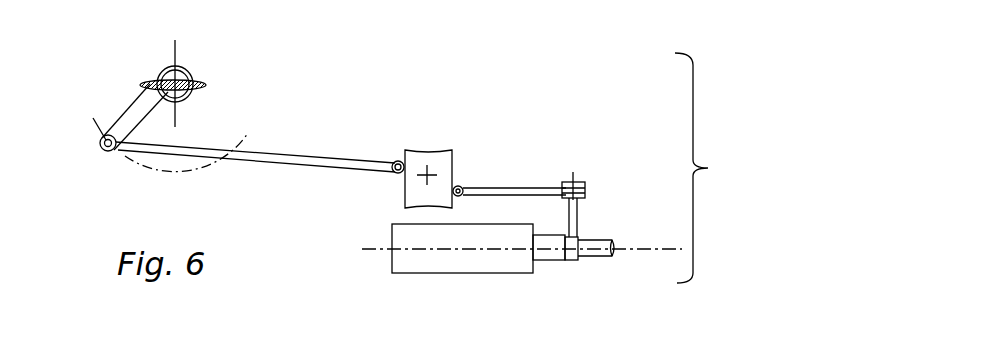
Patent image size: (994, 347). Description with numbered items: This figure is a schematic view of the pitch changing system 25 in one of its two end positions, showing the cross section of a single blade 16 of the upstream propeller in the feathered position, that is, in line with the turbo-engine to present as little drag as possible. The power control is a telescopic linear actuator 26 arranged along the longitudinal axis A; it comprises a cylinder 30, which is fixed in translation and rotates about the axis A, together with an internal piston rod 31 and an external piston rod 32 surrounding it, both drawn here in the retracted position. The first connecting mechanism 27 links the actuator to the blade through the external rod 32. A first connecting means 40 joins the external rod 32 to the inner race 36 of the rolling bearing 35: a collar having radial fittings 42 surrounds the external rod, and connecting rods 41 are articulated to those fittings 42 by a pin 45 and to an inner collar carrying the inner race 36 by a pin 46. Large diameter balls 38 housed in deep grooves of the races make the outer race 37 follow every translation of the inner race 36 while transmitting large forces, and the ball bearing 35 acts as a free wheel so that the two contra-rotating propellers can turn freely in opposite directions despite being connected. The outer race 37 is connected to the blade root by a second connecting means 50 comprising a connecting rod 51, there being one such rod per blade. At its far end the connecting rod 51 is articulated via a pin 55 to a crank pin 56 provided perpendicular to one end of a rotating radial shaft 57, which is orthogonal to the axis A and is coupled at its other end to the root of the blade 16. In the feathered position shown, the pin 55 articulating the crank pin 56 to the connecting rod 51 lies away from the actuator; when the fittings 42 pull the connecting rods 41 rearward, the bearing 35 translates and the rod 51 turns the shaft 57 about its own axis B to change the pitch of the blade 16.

The blade 16 is at (194, 82).
The changing system 25 is at (709, 168).
The linear actuator 26 is at (407, 282).
The first connecting mechanism 27 is at (383, 120).
The cylinder 30 is at (475, 260).
The internal piston rod 31 is at (600, 257).
The external piston rod 32 is at (550, 260).
The rolling bearing 35 is at (427, 141).
The inner race 36 is at (452, 162).
The outer race 37 is at (394, 172).
The balls 38 is at (420, 188).
The first connecting means 40 is at (581, 156).
The connecting rods 41 is at (537, 188).
The radial fittings 42 is at (577, 212).
The pin 45 is at (577, 180).
The pin 46 is at (462, 187).
The second connecting means 50 is at (296, 146).
The connecting rods 51 is at (258, 163).
The pin 55 is at (103, 152).
The crank pin 56 is at (130, 103).
The rotating radial shaft 57 is at (168, 72).
The longitudinal axis A is at (640, 250).
The axis B is at (177, 78).